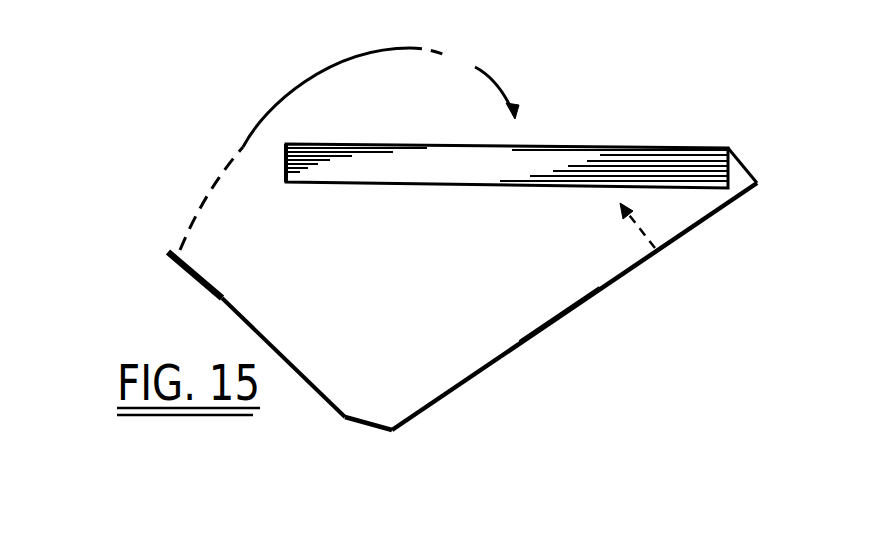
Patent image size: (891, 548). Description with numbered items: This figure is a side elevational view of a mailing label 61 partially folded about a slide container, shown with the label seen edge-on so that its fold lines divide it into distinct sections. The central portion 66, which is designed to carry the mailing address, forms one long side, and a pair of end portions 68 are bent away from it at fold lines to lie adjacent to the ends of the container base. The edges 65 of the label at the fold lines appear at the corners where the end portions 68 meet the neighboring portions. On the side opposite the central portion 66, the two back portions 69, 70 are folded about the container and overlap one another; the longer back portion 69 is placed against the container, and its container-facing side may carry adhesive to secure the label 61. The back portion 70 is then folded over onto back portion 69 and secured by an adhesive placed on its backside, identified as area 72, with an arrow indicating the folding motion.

The mailing label 61 is at (600, 288).
The flap edge 65 is at (728, 150).
The central portion 66 is at (557, 322).
The end portion 68 is at (743, 163).
The back portion 69 is at (578, 147).
The back portion 70 is at (282, 353).
The adhesive area 72 is at (203, 275).